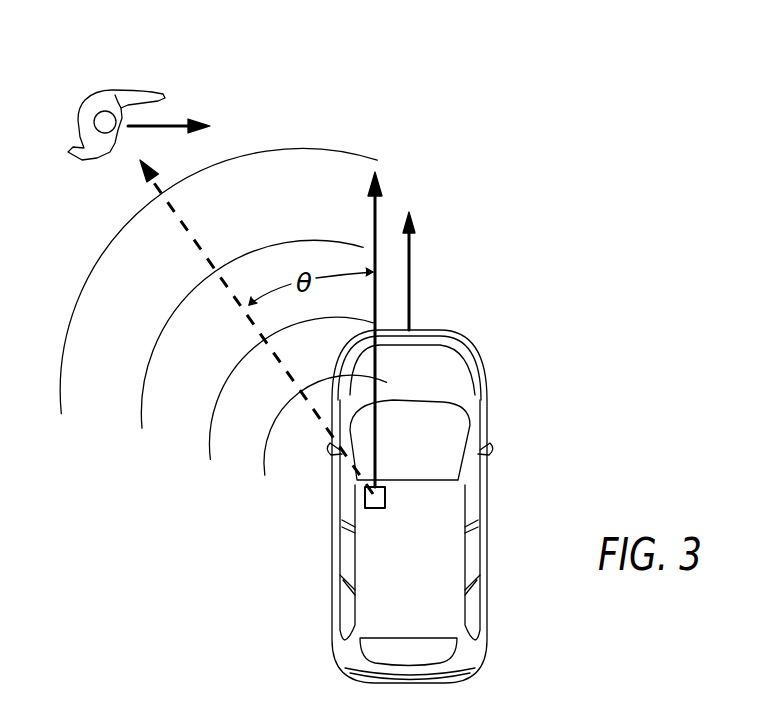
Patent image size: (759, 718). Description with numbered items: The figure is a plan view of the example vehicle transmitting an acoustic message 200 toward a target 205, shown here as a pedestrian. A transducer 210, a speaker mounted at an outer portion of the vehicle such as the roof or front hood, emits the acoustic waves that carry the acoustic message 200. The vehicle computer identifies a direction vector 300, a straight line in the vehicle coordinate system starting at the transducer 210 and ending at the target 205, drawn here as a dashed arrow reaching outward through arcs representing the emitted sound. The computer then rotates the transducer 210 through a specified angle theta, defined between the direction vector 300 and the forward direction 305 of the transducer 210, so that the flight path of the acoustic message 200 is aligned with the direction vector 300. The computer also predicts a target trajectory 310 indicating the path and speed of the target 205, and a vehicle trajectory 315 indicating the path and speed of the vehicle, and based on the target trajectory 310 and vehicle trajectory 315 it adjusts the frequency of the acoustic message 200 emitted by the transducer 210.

The acoustic message 200 is at (311, 148).
The target 205 is at (117, 87).
The transducer 210 is at (375, 510).
The direction vector 300 is at (316, 423).
The forward direction 305 is at (370, 223).
The target trajectory 310 is at (173, 125).
The vehicle trajectory 315 is at (413, 273).